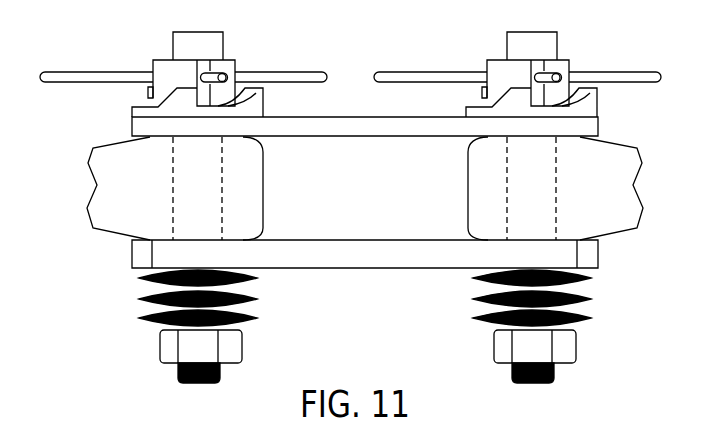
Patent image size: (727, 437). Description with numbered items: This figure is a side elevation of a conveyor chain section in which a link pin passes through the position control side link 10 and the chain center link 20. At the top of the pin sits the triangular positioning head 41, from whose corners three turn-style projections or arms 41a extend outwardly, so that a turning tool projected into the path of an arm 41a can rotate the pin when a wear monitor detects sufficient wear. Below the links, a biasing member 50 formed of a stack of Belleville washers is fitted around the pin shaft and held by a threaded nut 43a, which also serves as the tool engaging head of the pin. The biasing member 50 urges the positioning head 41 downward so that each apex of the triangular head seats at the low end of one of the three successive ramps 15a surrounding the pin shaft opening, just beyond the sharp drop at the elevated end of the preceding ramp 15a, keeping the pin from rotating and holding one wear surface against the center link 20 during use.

The position control side link 10 is at (345, 104).
The ramp 15a is at (148, 91).
The chain center link 20 is at (150, 195).
The positioning head 41 is at (170, 72).
The turn-style projection 41a is at (63, 72).
The nut 43a is at (167, 343).
The biasing member 50 is at (133, 278).